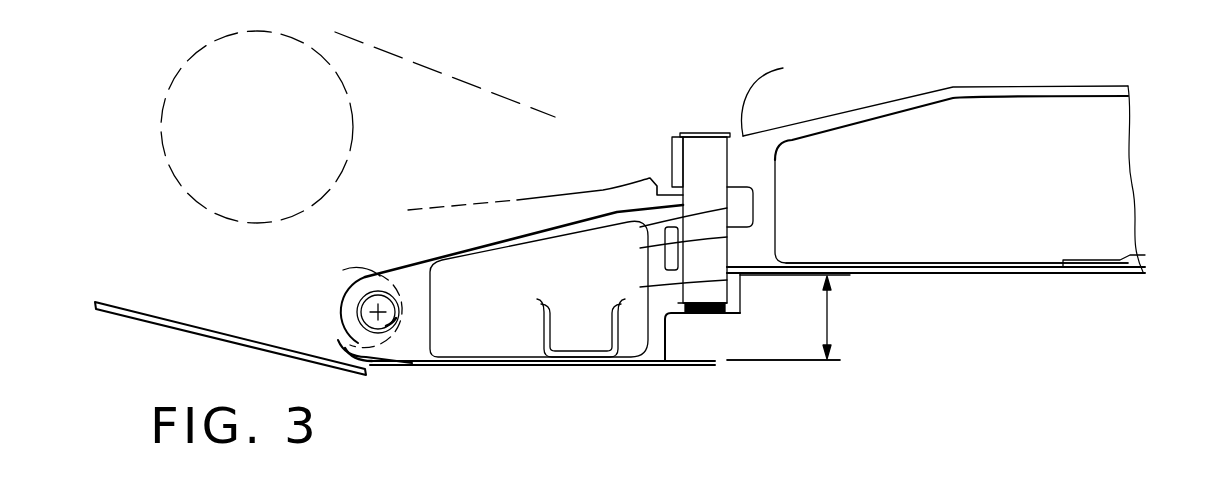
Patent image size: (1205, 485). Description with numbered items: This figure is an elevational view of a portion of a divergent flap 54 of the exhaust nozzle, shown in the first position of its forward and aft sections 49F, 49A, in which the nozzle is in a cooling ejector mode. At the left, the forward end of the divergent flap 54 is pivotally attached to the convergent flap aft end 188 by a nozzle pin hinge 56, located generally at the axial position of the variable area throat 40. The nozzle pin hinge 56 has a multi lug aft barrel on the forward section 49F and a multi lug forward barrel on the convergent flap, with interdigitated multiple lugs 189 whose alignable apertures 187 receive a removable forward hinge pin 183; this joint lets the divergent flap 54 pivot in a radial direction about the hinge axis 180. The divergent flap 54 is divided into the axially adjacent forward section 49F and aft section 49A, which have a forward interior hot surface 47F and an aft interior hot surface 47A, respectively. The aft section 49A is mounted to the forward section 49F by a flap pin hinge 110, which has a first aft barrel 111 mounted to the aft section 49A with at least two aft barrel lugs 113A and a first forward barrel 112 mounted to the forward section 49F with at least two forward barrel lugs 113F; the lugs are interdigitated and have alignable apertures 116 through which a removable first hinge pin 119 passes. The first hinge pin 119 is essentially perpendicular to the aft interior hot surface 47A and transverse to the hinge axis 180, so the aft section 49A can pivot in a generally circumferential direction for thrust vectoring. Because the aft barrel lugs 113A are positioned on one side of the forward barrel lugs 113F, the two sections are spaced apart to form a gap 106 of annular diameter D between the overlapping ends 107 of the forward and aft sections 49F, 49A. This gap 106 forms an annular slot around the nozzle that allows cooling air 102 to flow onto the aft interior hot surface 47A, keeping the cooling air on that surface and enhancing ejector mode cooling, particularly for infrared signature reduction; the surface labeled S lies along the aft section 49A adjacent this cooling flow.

The variable area throat 40 is at (403, 416).
The aft interior hot surface 47A is at (882, 274).
The forward interior hot surface 47F is at (513, 366).
The aft section 49A is at (963, 262).
The forward section 49F is at (520, 353).
The divergent flap 54 is at (766, 432).
The nozzle pin hinge 56 is at (352, 275).
The cooling air 102 is at (784, 382).
The gap 106 is at (729, 346).
The overlapping ends 107 is at (750, 277).
The flap pin hinge 110 is at (759, 124).
The first aft barrel 111 is at (786, 96).
The first forward barrel 112 is at (657, 188).
The aft barrel lugs 113A is at (672, 152).
The forward barrel lugs 113F is at (757, 200).
The alignable apertures 116 is at (720, 160).
The first hinge pin 119 is at (680, 298).
The hinge axis 180 is at (345, 300).
The forward hinge pin 183 is at (360, 312).
The alignable apertures 187 is at (403, 328).
The convergent flap aft end 188 is at (197, 307).
The interdigitated multiple lugs 189 is at (383, 264).
The annular diameter D is at (811, 317).
The stop surface S is at (998, 274).